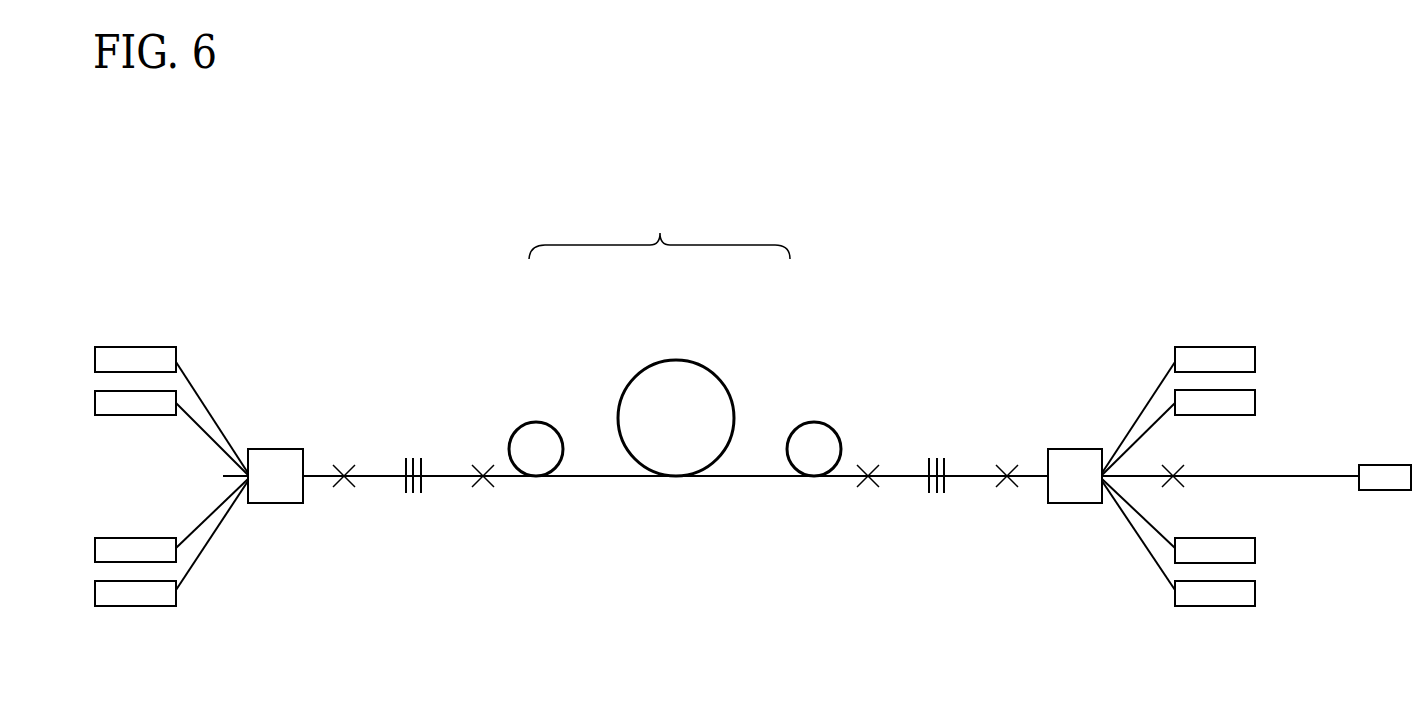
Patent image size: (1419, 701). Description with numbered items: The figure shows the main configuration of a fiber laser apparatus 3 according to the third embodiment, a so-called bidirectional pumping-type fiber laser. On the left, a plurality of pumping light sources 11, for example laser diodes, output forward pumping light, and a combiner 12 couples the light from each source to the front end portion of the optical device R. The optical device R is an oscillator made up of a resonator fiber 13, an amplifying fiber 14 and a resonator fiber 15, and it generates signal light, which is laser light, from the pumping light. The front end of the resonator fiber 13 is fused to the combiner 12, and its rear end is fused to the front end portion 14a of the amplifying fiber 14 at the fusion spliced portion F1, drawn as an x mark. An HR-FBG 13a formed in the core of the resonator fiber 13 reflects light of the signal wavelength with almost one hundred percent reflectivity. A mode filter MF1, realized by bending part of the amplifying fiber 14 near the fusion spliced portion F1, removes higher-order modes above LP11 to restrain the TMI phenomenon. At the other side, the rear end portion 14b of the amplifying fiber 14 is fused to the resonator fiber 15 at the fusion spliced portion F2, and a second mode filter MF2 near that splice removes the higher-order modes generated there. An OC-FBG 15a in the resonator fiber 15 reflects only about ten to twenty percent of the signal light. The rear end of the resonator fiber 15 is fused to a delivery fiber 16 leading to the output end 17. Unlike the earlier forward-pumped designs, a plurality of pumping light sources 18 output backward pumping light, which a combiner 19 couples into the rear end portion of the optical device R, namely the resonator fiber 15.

The fiber laser apparatus 3 is at (1020, 197).
The pumping light sources 11 is at (138, 318).
The combiner 12 is at (274, 449).
The resonator fiber 13 is at (453, 448).
The HR-FBG 13a is at (413, 493).
The amplifying fiber 14 is at (596, 447).
The front end portion 14a is at (516, 522).
The rear end portion 14b is at (855, 522).
The fusion spliced portion F1 is at (483, 487).
The fusion spliced portion F2 is at (868, 487).
The mode filter MF1 is at (537, 422).
The mode filter MF2 is at (814, 422).
The resonator fiber 15 is at (899, 447).
The OC-FBG 15a is at (937, 493).
The optical device R is at (659, 230).
The delivery fiber 16 is at (1307, 475).
The output end 17 is at (1383, 465).
The pumping light sources 18 is at (1215, 318).
The combiner 19 is at (1075, 449).